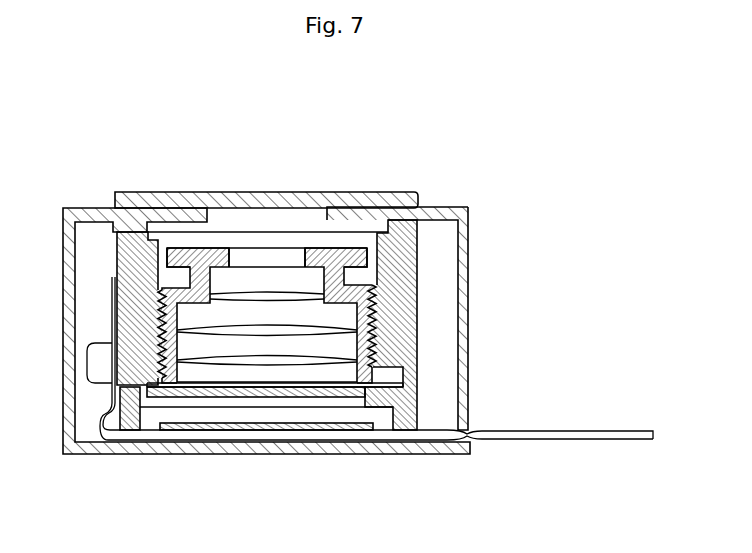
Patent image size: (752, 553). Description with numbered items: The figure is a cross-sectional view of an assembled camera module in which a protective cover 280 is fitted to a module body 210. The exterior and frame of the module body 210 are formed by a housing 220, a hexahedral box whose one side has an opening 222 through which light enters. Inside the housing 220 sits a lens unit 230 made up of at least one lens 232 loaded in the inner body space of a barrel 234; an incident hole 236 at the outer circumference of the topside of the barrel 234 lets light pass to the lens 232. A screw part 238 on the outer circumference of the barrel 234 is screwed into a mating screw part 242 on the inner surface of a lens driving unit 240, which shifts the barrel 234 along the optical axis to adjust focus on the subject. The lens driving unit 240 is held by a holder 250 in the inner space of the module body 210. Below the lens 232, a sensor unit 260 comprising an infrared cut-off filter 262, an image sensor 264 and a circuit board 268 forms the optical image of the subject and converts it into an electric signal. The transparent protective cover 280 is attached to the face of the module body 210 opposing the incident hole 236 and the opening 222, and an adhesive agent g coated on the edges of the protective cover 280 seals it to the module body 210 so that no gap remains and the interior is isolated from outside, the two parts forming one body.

The module body 210 is at (115, 180).
The housing 220 is at (434, 207).
The opening 222 is at (326, 214).
The protective cover 280 is at (386, 194).
The adhesive agent g is at (150, 231).
The lens unit 230 is at (267, 239).
The lens 232 is at (253, 293).
The barrel 234 is at (193, 260).
The incident hole 236 is at (313, 248).
The screw part 238 is at (157, 317).
The lens driving unit 240 is at (418, 253).
The screw part 242 is at (412, 323).
The holder 250 is at (402, 442).
The sensor unit 260 is at (271, 463).
The infrared cut-off filter 262 is at (343, 504).
The image sensor 264 is at (287, 441).
The circuit board 268 is at (345, 441).